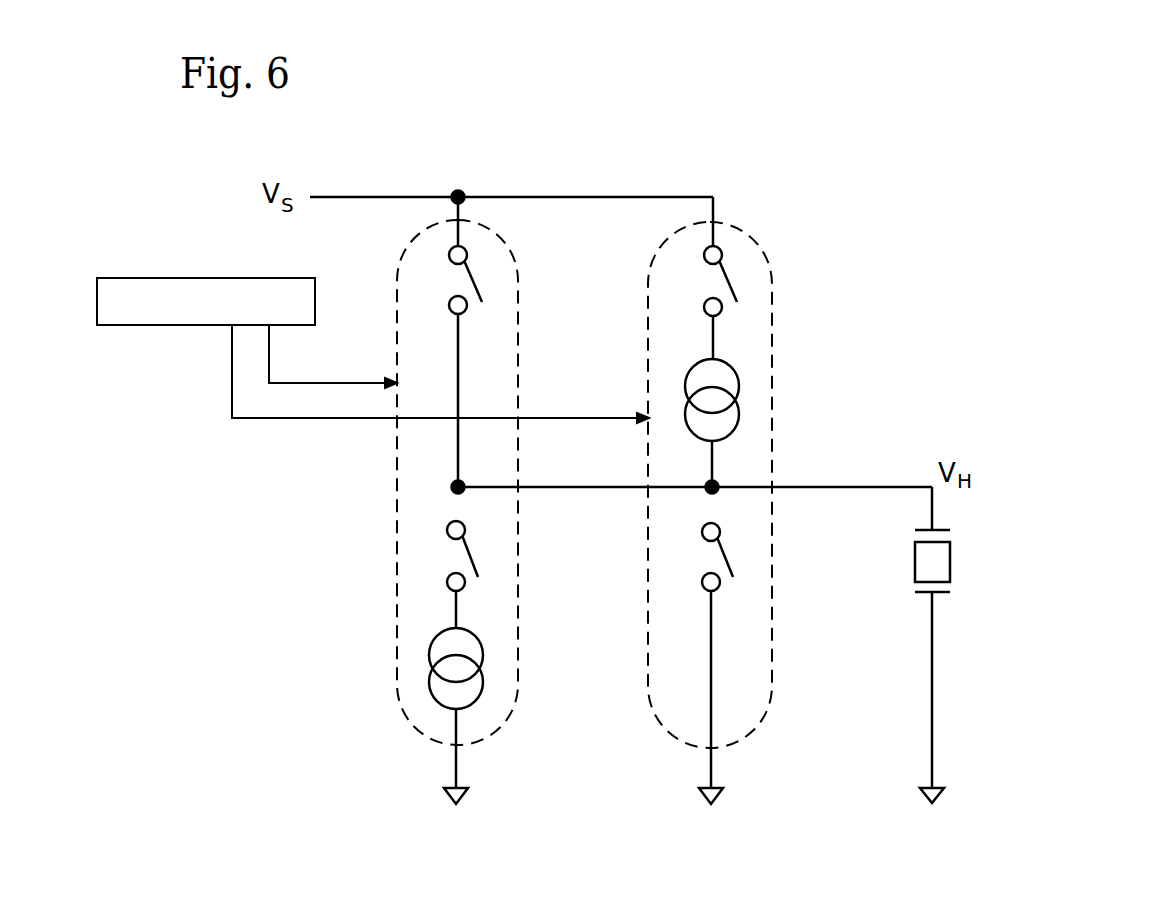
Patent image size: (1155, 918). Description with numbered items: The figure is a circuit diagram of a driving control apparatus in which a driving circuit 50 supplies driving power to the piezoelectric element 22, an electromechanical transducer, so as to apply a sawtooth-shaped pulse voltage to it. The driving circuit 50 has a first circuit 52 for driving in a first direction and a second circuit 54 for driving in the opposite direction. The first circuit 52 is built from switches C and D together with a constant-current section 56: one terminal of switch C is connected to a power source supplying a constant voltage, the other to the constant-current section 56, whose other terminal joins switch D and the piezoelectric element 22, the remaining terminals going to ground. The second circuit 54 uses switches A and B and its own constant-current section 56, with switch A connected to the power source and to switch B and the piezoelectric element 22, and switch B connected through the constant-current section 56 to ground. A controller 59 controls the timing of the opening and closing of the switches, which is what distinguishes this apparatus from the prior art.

The driving circuit 50 is at (887, 179).
The first circuit 52 is at (775, 275).
The second circuit 54 is at (519, 272).
The constant-current section 56 is at (742, 398).
The controller 59 is at (373, 350).
The piezoelectric element 22 is at (950, 574).